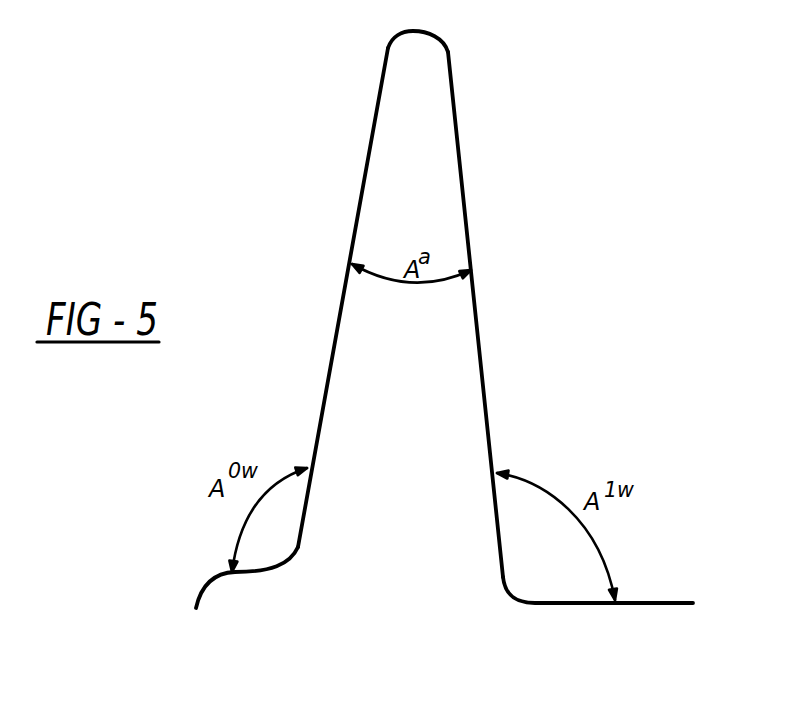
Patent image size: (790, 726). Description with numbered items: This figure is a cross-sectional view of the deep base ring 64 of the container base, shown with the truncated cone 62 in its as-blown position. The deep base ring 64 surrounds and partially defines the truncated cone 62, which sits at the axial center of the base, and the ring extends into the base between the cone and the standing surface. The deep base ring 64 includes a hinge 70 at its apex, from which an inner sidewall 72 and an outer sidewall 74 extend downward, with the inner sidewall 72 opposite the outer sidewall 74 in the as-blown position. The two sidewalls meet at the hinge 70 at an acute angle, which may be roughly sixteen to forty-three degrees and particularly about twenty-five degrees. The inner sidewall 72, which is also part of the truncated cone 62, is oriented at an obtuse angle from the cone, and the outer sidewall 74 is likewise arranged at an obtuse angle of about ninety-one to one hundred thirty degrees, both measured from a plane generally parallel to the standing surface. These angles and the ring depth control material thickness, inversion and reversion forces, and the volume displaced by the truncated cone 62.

The hinge 70 is at (411, 36).
The outer sidewall 74 is at (327, 413).
The inner sidewall 72 is at (487, 418).
The deep base ring 64 is at (308, 503).
The truncated cone 62 is at (652, 604).